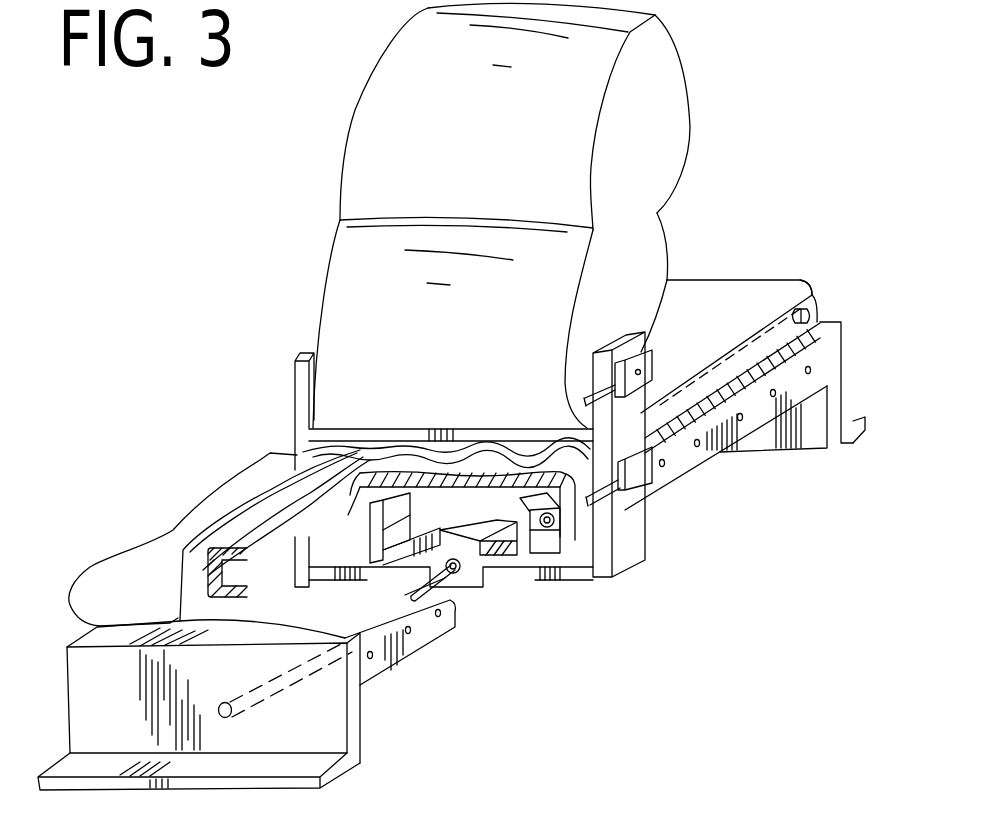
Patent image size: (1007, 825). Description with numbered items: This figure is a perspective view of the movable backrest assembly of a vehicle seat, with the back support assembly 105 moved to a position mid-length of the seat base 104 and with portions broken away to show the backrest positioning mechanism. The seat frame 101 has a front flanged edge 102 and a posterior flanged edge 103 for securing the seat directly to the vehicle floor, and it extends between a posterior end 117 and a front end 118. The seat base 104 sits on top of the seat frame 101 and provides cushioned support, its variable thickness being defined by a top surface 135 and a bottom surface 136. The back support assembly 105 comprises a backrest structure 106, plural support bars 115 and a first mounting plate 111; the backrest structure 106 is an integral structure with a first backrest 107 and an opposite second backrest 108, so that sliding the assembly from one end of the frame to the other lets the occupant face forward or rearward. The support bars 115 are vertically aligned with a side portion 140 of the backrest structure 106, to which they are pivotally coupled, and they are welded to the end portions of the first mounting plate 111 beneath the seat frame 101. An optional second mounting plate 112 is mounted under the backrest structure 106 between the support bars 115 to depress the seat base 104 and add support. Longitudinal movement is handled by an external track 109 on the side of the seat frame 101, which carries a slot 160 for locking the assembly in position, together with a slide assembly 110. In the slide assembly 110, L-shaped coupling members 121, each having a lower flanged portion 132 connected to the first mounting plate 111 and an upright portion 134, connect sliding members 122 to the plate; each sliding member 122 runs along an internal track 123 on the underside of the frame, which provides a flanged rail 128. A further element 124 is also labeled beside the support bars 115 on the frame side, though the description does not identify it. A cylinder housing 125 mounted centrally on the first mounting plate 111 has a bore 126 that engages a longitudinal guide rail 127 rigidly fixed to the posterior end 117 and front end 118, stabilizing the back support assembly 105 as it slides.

The seat frame 101 is at (808, 517).
The front flanged edge 102 is at (853, 450).
The posterior flanged edge 103 is at (320, 787).
The seat base 104 is at (157, 533).
The back support assembly 105 is at (287, 413).
The backrest structure 106 is at (343, 162).
The first backrest 107 is at (690, 130).
The second backrest 108 is at (322, 300).
The external track 109 is at (817, 338).
The slide assembly 110 is at (457, 514).
The first mounting plate 111 is at (350, 600).
The second mounting plate 112 is at (327, 437).
The support bars 115 is at (260, 457).
The posterior end 117 is at (288, 780).
The front end 118 is at (865, 417).
The coupling member 121 is at (380, 530).
The sliding member 122 is at (580, 515).
The internal track 123 is at (297, 543).
The clamp block 124 is at (640, 470).
The cylinder housing 125 is at (456, 592).
The bore 126 is at (459, 583).
The longitudinal guide rail 127 is at (425, 590).
The flanged rail 128 is at (300, 535).
The lower flanged portion 132 is at (385, 563).
The upright portion 134 is at (523, 527).
The top surface 135 is at (813, 293).
The bottom surface 136 is at (809, 315).
The side portion 140 is at (643, 268).
The slot 160 is at (745, 420).